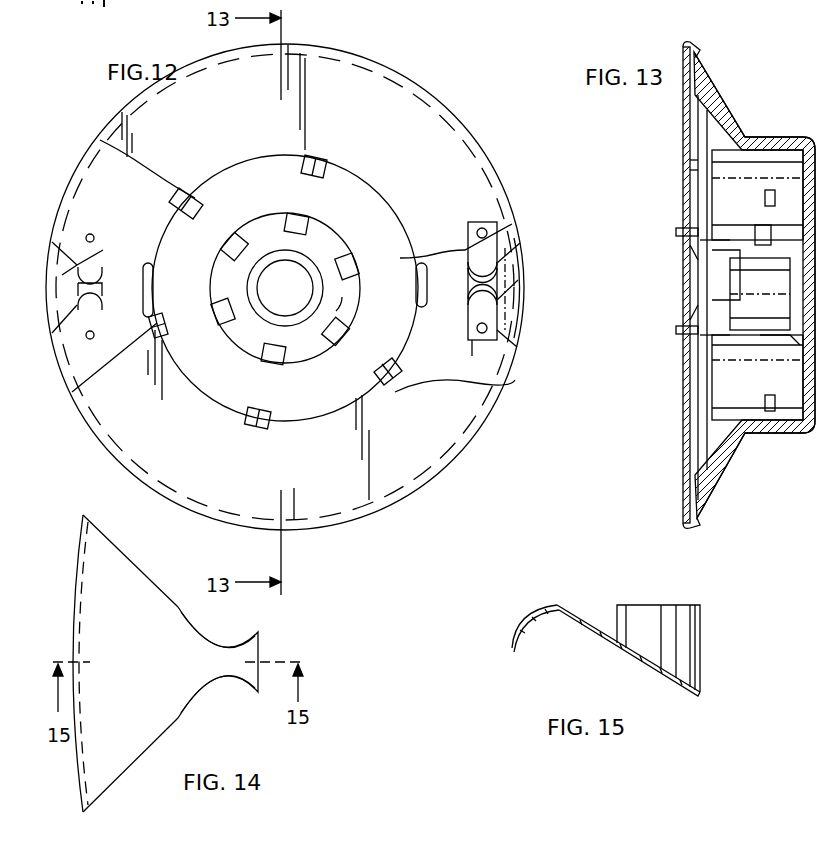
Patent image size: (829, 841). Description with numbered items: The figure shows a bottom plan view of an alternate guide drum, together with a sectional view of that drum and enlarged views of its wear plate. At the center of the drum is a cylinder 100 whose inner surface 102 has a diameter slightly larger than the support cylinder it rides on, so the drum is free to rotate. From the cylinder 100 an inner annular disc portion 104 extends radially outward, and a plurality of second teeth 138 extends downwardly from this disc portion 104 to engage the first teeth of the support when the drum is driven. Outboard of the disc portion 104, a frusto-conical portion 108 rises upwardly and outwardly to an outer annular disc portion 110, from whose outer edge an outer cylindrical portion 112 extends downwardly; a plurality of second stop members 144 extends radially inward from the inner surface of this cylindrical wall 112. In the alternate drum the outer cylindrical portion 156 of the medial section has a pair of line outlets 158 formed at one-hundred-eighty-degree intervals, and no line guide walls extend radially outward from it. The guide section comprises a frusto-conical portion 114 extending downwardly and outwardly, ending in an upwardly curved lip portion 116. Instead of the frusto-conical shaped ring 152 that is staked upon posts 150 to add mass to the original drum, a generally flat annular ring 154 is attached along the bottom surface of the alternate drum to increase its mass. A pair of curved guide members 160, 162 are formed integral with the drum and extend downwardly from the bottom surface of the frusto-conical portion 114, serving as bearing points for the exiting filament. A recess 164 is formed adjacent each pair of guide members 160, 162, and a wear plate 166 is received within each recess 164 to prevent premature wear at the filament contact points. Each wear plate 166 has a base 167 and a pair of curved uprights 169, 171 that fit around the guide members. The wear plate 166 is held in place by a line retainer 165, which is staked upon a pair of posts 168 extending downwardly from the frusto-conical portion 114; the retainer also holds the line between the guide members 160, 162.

In FIG. 12, the cylinder 100 is at (270, 252).
In FIG. 12, the inner surface 102 is at (310, 266).
In FIG. 12, the inner annular disc portion 104 is at (347, 296).
In FIG. 13, the inner annular disc portion 104 is at (745, 342).
In FIG. 13, the frusto-conical portion 108 is at (780, 362).
In FIG. 12, the outer annular disc portion 110 is at (382, 226).
In FIG. 13, the outer cylindrical portion 112 is at (790, 434).
In FIG. 12, the frusto-conical portion 114 is at (480, 358).
In FIG. 13, the frusto-conical portion 114 is at (690, 497).
In FIG. 13, the upwardly curved lip portion 116 is at (690, 518).
In FIG. 12, the second teeth 138 is at (338, 258).
In FIG. 12, the second stop members 144 is at (302, 168).
In FIG. 13, the second stop members 144 is at (758, 198).
In FIG. 12, the posts 150 is at (93, 235).
In FIG. 13, the frusto-conical shaped ring 152 is at (712, 92).
In FIG. 12, the flat annular ring 154 is at (455, 148).
In FIG. 13, the flat annular ring 154 is at (683, 113).
In FIG. 12, the outer cylindrical portion 156 is at (175, 203).
In FIG. 13, the outer cylindrical portion 156 is at (760, 191).
In FIG. 12, the line outlets 158 is at (160, 232).
In FIG. 13, the line outlets 158 is at (683, 160).
In FIG. 12, the curved guide member 160 is at (98, 310).
In FIG. 12, the curved guide member 162 is at (100, 277).
In FIG. 13, the curved guide member 162 is at (690, 252).
In FIG. 12, the recess 164 is at (104, 316).
In FIG. 13, the recess 164 is at (690, 312).
In FIG. 12, the line retainer 165 is at (512, 296).
In FIG. 13, the line retainer 165 is at (712, 290).
In FIG. 12, the wear plate 166 is at (500, 278).
In FIG. 14, the wear plate 166 is at (135, 580).
In FIG. 15, the wear plate 166 is at (570, 605).
In FIG. 14, the base 167 is at (150, 673).
In FIG. 15, the base 167 is at (632, 652).
In FIG. 12, the posts 168 is at (487, 232).
In FIG. 13, the posts 168 is at (680, 232).
In FIG. 14, the curved upright 169 is at (221, 640).
In FIG. 15, the curved upright 169 is at (682, 605).
In FIG. 14, the curved upright 171 is at (228, 682).